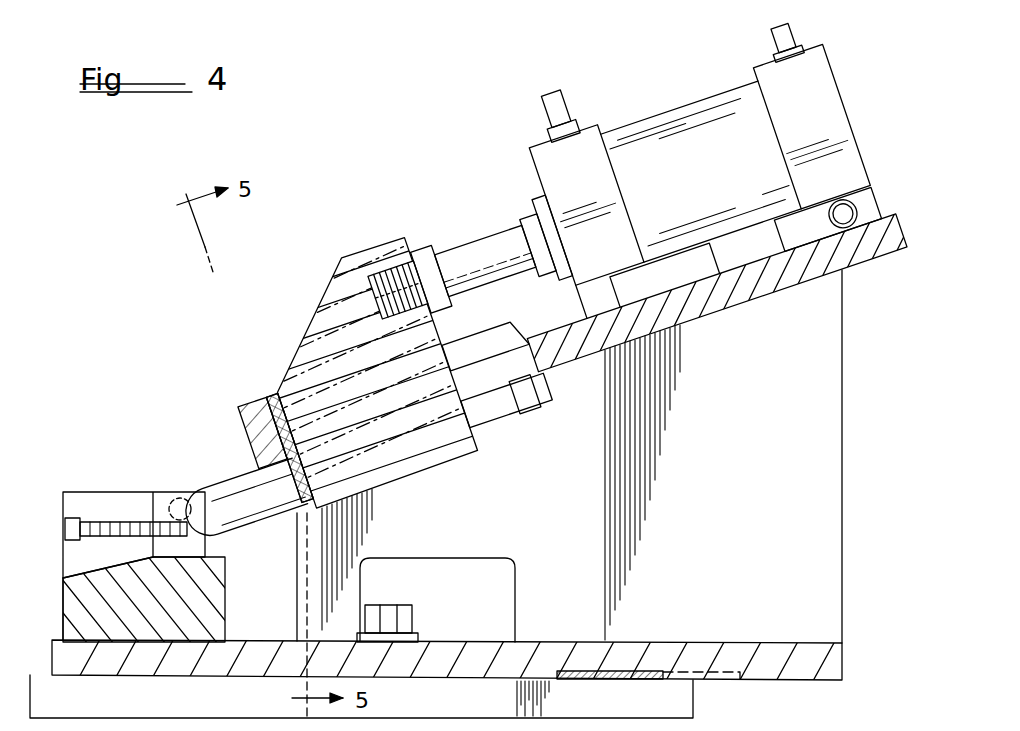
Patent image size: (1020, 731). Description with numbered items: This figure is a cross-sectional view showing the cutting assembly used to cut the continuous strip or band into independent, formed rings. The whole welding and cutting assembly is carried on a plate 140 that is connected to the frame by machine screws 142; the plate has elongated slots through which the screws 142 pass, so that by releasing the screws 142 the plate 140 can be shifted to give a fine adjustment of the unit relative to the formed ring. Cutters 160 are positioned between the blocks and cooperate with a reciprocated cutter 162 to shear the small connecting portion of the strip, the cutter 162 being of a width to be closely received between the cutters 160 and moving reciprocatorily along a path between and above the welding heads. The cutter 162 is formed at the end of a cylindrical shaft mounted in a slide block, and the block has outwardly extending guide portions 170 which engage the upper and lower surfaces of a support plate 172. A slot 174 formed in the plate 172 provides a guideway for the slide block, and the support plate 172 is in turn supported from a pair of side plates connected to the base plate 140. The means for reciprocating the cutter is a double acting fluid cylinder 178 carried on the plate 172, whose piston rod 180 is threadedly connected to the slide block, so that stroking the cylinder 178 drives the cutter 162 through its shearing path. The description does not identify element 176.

The plate 140 is at (657, 642).
The machine screws 142 is at (414, 622).
The cutters 160 is at (192, 472).
The reciprocated cutter 162 is at (236, 520).
The guide portions 170 is at (512, 326).
The support plate 172 is at (737, 308).
The slot 174 is at (517, 402).
The stop member 176 is at (514, 378).
The double acting fluid cylinder 178 is at (718, 92).
The piston rod 180 is at (478, 240).